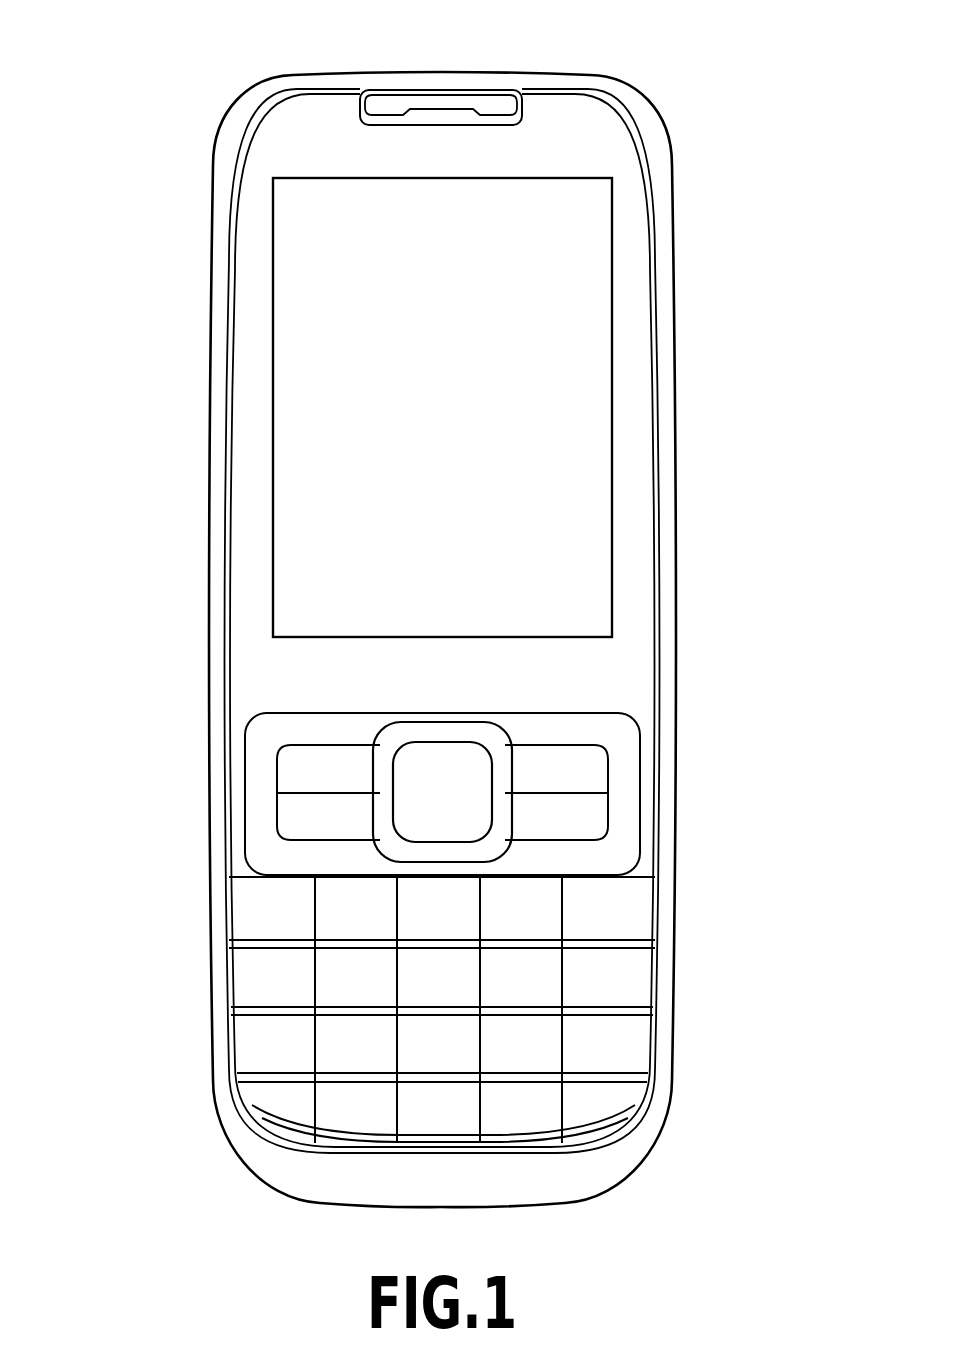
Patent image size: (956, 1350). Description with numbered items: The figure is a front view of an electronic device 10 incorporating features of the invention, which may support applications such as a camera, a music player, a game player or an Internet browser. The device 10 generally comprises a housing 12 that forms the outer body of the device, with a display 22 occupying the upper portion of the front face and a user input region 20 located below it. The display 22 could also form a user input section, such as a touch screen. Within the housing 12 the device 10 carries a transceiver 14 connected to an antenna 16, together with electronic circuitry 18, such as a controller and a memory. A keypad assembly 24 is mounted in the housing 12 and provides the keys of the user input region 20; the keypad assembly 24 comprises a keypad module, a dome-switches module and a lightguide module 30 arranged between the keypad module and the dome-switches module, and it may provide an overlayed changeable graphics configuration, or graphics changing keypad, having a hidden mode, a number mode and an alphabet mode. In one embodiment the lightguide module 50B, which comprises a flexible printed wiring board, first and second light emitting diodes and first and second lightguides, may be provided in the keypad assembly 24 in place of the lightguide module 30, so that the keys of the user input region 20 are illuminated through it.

The electronic device 10 is at (173, 70).
The housing 12 is at (212, 258).
The transceiver 14 is at (642, 353).
The antenna 16 is at (633, 238).
The electronic circuitry 18 is at (677, 593).
The user input region 20 is at (700, 712).
The display 22 is at (295, 408).
The keypad assembly 24 is at (242, 928).
The lightguide module 30 is at (295, 1067).
The lightguide module 50B is at (273, 1044).